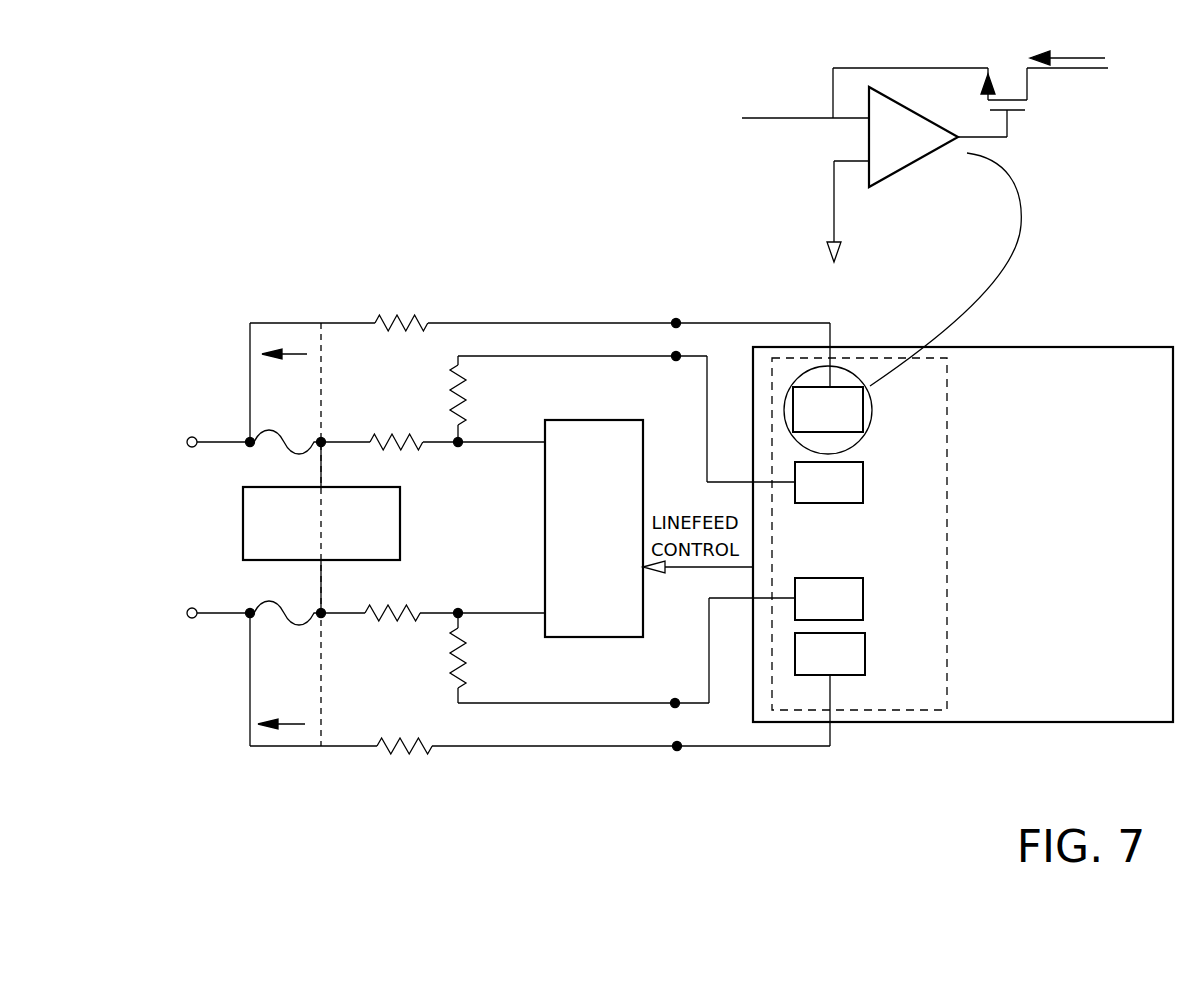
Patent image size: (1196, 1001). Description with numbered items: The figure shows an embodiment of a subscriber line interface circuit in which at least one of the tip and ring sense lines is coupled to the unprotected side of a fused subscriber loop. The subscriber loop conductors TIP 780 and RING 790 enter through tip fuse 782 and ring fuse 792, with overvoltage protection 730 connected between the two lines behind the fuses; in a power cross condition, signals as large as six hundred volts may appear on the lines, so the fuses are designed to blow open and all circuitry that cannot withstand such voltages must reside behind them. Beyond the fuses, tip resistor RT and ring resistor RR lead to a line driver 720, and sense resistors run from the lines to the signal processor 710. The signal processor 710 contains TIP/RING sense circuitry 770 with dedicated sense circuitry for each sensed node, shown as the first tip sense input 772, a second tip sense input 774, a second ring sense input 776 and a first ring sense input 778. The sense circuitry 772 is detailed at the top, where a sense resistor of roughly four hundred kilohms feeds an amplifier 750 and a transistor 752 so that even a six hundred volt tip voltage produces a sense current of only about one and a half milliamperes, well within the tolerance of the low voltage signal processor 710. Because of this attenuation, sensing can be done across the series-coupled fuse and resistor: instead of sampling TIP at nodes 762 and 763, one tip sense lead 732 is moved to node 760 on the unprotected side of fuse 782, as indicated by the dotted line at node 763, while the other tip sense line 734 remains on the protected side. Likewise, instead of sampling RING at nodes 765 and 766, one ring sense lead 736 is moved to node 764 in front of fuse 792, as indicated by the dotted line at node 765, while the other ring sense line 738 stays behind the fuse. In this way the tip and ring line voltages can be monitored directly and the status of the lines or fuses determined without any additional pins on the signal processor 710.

The signal processor 710 is at (963, 534).
The line driver 720 is at (594, 528).
The overvoltage protection 730 is at (400, 520).
The tip sense lead 732 is at (678, 315).
The tip sense line 734 is at (674, 364).
The ring sense lead 736 is at (675, 754).
The ring sense line 738 is at (672, 695).
The amplifier 750 is at (907, 165).
The transistor 752 is at (1035, 115).
The node 760 is at (248, 436).
The node 762 is at (461, 449).
The node 763 is at (324, 437).
The node 764 is at (246, 608).
The node 765 is at (325, 620).
The node 766 is at (462, 606).
The TIP/RING sense circuitry 770 is at (947, 538).
The sense circuitry 772 is at (863, 410).
The TIP2 sense input 774 is at (863, 482).
The RING2 sense input 776 is at (863, 598).
The RING1 sense input 778 is at (865, 652).
The TIP 780 is at (170, 440).
The fuse 782 is at (287, 431).
The RING 790 is at (166, 615).
The fuse 792 is at (287, 624).